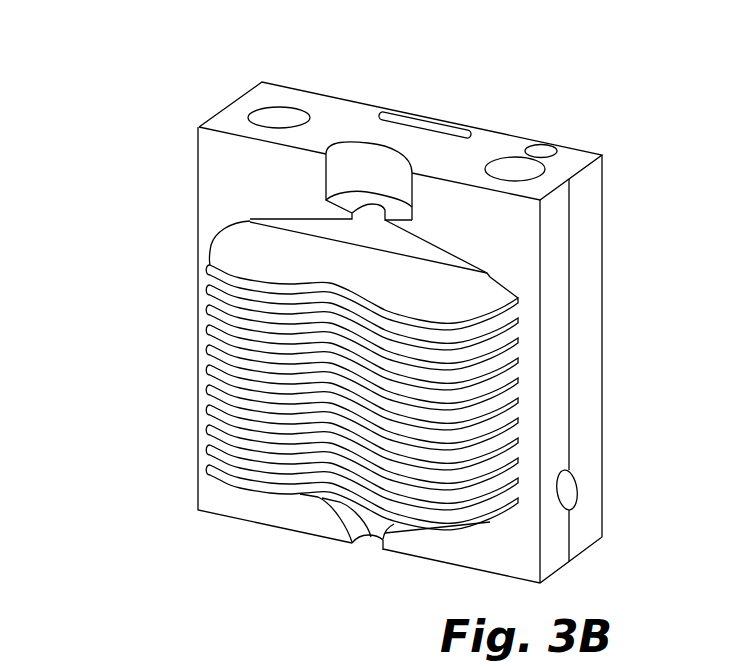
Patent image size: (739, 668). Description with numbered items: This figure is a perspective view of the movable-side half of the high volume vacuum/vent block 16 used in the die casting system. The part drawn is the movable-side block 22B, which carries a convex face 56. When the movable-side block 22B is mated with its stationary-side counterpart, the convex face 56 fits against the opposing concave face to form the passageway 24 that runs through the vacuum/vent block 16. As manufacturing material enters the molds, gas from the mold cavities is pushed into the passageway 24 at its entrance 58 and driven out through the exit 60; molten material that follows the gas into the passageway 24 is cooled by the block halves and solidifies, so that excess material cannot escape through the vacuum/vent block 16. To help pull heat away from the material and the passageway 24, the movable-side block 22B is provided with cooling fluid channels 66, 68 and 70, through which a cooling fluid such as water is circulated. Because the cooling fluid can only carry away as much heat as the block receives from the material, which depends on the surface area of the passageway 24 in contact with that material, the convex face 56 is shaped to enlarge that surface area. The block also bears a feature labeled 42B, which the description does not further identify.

The vacuum/vent block 16 is at (128, 180).
The movable-side block 22B is at (263, 93).
The passageway 24 is at (322, 509).
The semicircular notch 42B is at (358, 165).
The convex face 56 is at (478, 328).
The entrance 58 is at (362, 554).
The exit 60 is at (368, 240).
The cooling fluid channel 66 is at (507, 173).
The cooling fluid channel 68 is at (283, 118).
The cooling fluid channel 70 is at (570, 488).